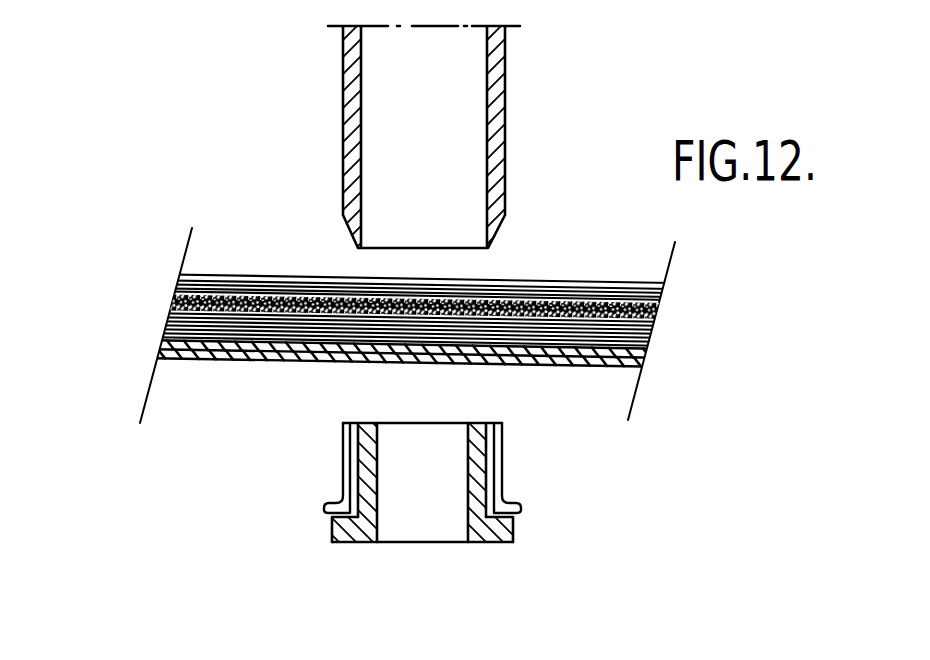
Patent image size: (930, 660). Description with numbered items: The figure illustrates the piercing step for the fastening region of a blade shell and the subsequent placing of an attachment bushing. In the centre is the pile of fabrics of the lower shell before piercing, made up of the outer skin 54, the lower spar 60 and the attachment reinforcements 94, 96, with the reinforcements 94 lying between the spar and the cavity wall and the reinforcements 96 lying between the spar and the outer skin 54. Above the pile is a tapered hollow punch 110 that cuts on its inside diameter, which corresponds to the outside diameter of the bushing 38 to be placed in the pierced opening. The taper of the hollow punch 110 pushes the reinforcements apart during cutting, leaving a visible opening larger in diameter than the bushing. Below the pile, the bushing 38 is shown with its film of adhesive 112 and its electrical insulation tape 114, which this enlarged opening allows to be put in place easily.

The hollow punch 110 is at (498, 70).
The attachment reinforcements 94 is at (410, 287).
The lower spar 60 is at (410, 306).
The attachment reinforcements 96 is at (410, 329).
The outer skin 54 is at (412, 353).
The film of adhesive 112 is at (490, 452).
The electrical insulation tape 114 is at (495, 497).
The bushing 38 is at (357, 528).